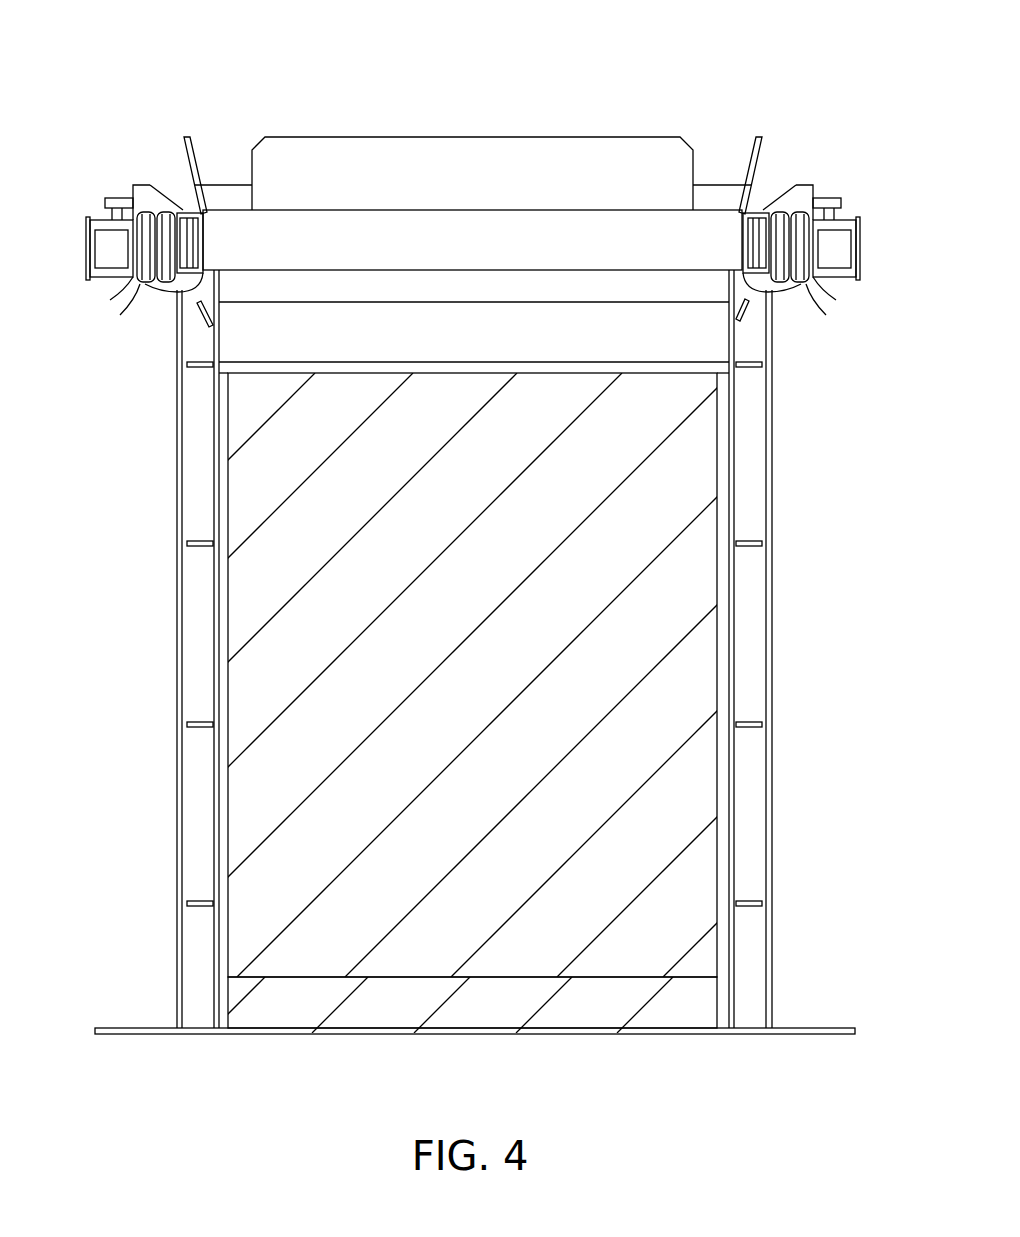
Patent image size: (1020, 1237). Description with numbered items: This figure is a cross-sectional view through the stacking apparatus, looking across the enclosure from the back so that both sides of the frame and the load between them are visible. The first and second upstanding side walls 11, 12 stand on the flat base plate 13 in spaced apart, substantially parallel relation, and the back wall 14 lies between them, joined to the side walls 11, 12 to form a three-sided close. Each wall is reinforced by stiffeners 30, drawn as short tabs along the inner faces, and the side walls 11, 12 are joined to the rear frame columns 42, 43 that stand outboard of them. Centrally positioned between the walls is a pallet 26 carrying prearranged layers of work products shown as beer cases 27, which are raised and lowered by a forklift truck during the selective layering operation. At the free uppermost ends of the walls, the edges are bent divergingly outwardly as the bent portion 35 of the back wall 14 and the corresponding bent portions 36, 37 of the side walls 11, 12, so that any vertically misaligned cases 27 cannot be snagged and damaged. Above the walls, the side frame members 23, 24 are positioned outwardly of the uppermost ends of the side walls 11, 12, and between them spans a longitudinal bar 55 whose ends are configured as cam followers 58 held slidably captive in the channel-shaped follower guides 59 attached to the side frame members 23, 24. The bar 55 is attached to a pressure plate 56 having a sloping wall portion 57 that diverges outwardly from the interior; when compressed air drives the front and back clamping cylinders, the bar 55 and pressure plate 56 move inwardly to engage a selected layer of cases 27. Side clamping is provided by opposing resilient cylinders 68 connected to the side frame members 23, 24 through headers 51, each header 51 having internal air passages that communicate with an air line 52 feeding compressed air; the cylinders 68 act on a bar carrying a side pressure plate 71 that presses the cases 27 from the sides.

The first upstanding side wall 11 is at (212, 498).
The second upstanding side wall 12 is at (737, 652).
The base plate 13 is at (798, 1020).
The back wall 14 is at (223, 600).
The side frame member 23 is at (113, 270).
The second side frame member 24 is at (847, 272).
The pallet 26 is at (573, 1013).
The beer cases 27 is at (598, 707).
The stiffeners 30 is at (750, 542).
The outwardly bent portion 35 is at (605, 338).
The bent portion 36 is at (205, 318).
The bent portion 37 is at (748, 312).
The rear frame column 42 is at (177, 805).
The rear frame column 43 is at (775, 835).
The header 51 is at (133, 272).
The air line 52 is at (130, 283).
The longitudinal bar 55 is at (233, 195).
The pressure plate 56 is at (450, 112).
The sloping wall portion 57 is at (562, 165).
The cam followers 58 is at (160, 192).
The follower guides 59 is at (113, 200).
The resilient cylinders 68 is at (158, 290).
The side pressure plate 71 is at (192, 140).